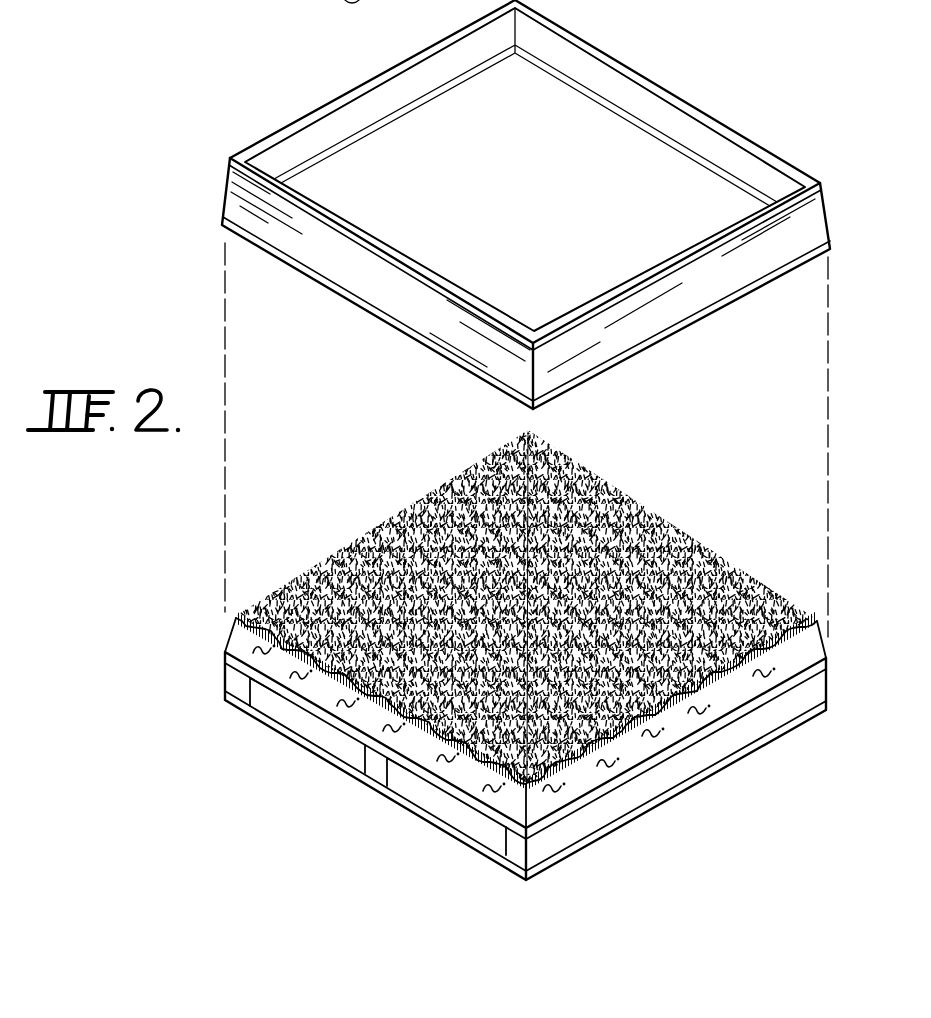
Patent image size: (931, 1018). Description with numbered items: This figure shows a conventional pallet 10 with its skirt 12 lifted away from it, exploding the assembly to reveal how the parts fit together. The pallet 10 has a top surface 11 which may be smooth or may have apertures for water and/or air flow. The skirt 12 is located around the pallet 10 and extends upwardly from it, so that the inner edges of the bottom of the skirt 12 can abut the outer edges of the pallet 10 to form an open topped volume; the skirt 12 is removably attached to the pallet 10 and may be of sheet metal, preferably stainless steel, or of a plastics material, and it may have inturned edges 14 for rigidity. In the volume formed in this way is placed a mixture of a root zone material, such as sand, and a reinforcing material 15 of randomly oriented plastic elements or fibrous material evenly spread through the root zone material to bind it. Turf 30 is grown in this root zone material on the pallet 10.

The pallet 10 is at (385, 798).
The top surface 11 is at (692, 727).
The skirt 12 is at (236, 202).
The inturned edges 14 is at (577, 40).
The reinforcing material 15 is at (343, 696).
The turf 30 is at (396, 500).